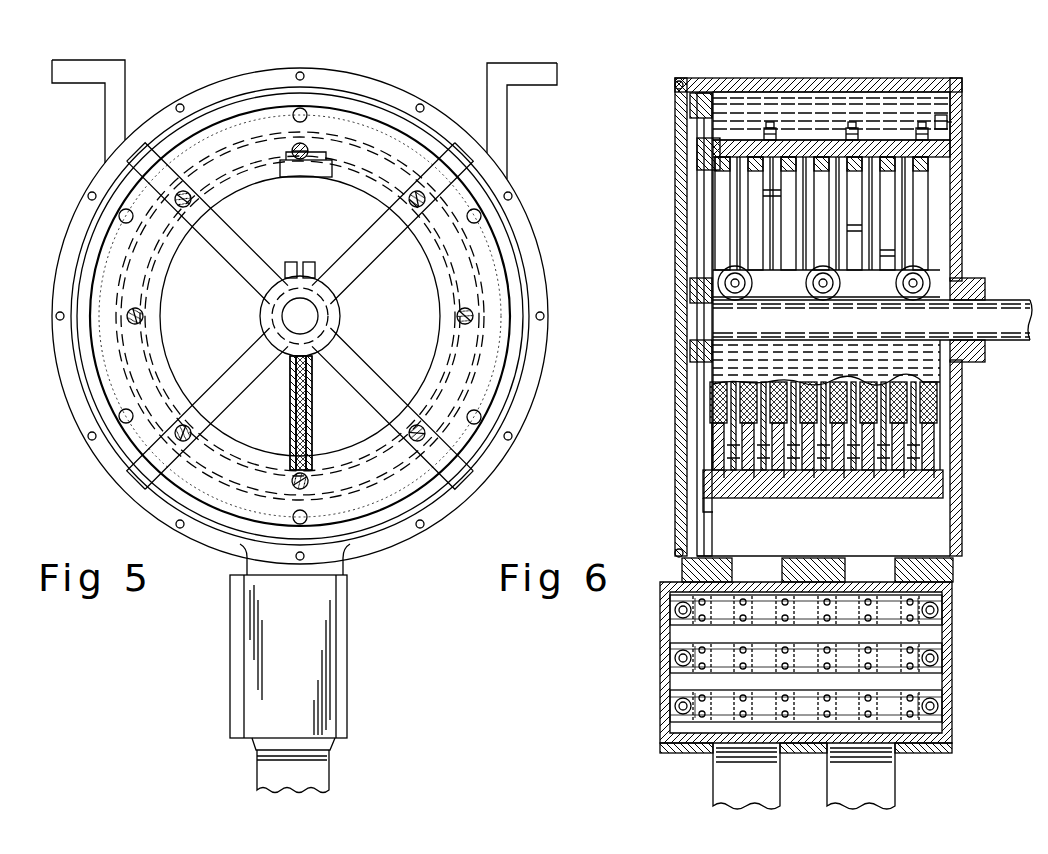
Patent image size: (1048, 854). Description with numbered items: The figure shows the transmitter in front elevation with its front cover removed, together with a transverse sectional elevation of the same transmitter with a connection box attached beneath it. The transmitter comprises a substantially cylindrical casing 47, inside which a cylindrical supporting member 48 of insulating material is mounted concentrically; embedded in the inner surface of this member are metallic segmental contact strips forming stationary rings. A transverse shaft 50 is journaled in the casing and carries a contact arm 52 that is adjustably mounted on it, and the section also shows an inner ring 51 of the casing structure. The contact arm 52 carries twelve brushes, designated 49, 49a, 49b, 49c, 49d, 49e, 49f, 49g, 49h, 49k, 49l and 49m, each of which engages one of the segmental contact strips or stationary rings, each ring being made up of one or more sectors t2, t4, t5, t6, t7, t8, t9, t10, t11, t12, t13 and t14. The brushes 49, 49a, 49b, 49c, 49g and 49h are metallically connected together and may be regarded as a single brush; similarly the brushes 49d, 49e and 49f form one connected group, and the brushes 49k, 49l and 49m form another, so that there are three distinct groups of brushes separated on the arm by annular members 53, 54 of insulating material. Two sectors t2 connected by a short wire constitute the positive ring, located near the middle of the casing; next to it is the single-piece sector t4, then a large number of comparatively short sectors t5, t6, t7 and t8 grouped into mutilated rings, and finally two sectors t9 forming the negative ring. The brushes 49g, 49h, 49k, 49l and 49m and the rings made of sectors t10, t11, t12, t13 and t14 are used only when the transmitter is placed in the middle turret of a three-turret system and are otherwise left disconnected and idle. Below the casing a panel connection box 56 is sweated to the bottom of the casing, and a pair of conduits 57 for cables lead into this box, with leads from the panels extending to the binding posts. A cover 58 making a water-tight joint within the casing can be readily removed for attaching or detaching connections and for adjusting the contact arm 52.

In FIG. 5, the casing 47 is at (402, 100).
In FIG. 6, the casing 47 is at (962, 98).
In FIG. 6, the cylindrical supporting member 48 is at (950, 152).
In FIG. 5, the brush 49 is at (306, 432).
In FIG. 6, the brush 49 is at (722, 455).
In FIG. 6, the brush 49a is at (748, 445).
In FIG. 6, the brush 49b is at (778, 438).
In FIG. 6, the brush 49c is at (808, 445).
In FIG. 6, the brush 49d is at (838, 450).
In FIG. 6, the brush 49e is at (866, 452).
In FIG. 6, the brush 49f is at (896, 455).
In FIG. 6, the brush 49g is at (880, 442).
In FIG. 6, the brush 49h is at (850, 430).
In FIG. 6, the brush 49k is at (895, 452).
In FIG. 6, the brush 49l is at (905, 463).
In FIG. 6, the brush 49m is at (940, 476).
In FIG. 5, the transverse shaft 50 is at (310, 316).
In FIG. 6, the transverse shaft 50 is at (1002, 308).
In FIG. 5, the rotating ring 51 is at (455, 232).
In FIG. 6, the rotating ring 51 is at (702, 256).
In FIG. 5, the contact arm 52 is at (290, 426).
In FIG. 6, the contact arm 52 is at (926, 372).
In FIG. 6, the annular member 53 is at (856, 136).
In FIG. 6, the annular member 54 is at (872, 380).
In FIG. 6, the terminal block 56 is at (938, 665).
In FIG. 5, the conduits 57 is at (318, 778).
In FIG. 6, the conduits 57 is at (884, 782).
In FIG. 6, the cover 58 is at (703, 492).
In FIG. 6, the sectors t2 is at (840, 500).
In FIG. 6, the sector t4 is at (812, 500).
In FIG. 6, the sectors t5 is at (826, 500).
In FIG. 6, the sectors t6 is at (794, 500).
In FIG. 6, the sectors t7 is at (776, 500).
In FIG. 6, the sectors t8 is at (752, 500).
In FIG. 6, the sectors t9 is at (740, 500).
In FIG. 6, the sectors t10 is at (851, 500).
In FIG. 6, the sectors t11 is at (872, 500).
In FIG. 6, the sectors t12 is at (886, 500).
In FIG. 6, the sectors t13 is at (908, 500).
In FIG. 6, the sectors t14 is at (916, 500).